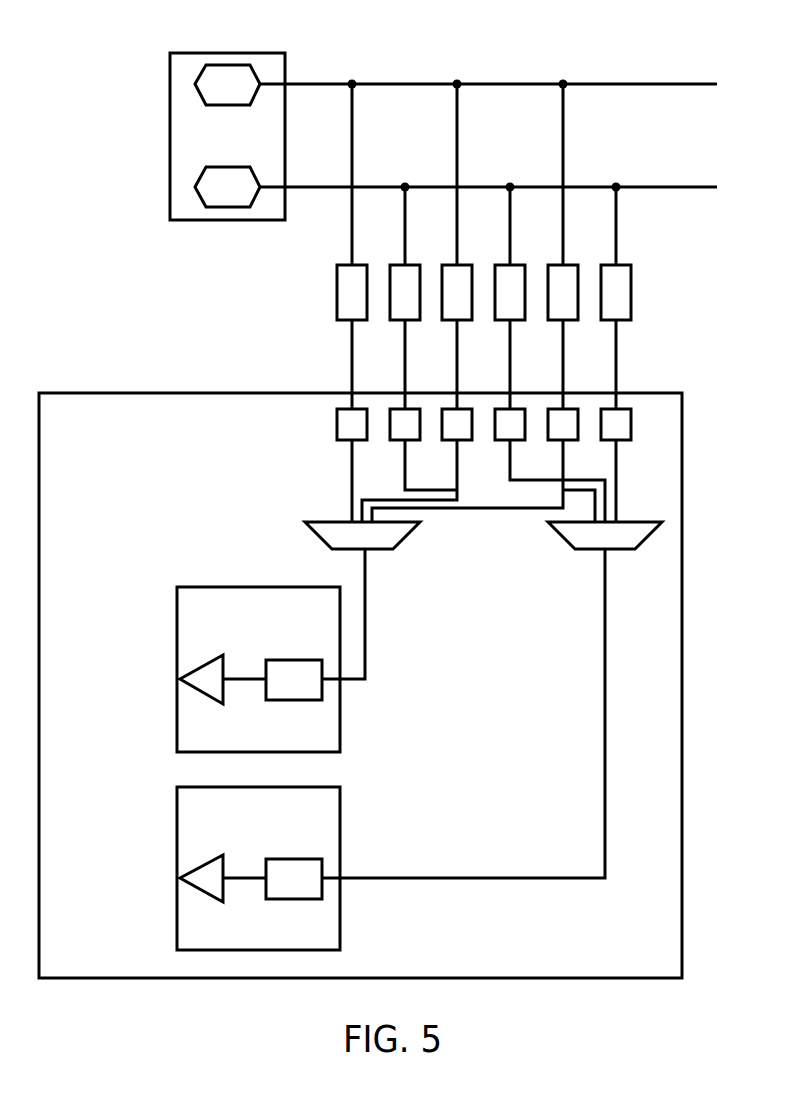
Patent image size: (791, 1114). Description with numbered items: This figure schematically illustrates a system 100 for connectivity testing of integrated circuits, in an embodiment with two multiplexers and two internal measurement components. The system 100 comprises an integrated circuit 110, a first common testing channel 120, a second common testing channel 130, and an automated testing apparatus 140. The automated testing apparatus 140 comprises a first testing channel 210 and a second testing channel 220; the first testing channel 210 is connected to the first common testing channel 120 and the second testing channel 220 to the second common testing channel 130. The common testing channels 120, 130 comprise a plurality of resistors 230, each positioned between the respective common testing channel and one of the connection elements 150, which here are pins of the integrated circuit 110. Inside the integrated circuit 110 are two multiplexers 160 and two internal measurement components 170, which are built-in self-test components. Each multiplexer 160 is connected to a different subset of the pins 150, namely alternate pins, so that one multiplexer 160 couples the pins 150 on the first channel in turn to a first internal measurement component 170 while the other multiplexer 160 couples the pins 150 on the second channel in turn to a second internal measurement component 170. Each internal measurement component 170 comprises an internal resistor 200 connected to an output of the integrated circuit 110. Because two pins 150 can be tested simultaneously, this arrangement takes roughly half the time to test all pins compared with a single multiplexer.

The system 100 is at (185, 312).
The integrated circuit 110 is at (286, 392).
The first common testing channel 120 is at (365, 185).
The second common testing channel 130 is at (408, 83).
The automated testing apparatus 140 is at (170, 135).
The connection elements 150 is at (631, 423).
The multiplexers 160 is at (378, 552).
The internal measurement components 170 is at (177, 679).
The internal resistor 200 is at (298, 660).
The first testing channel 210 is at (225, 208).
The second testing channel 220 is at (227, 63).
The resistors 230 is at (631, 293).